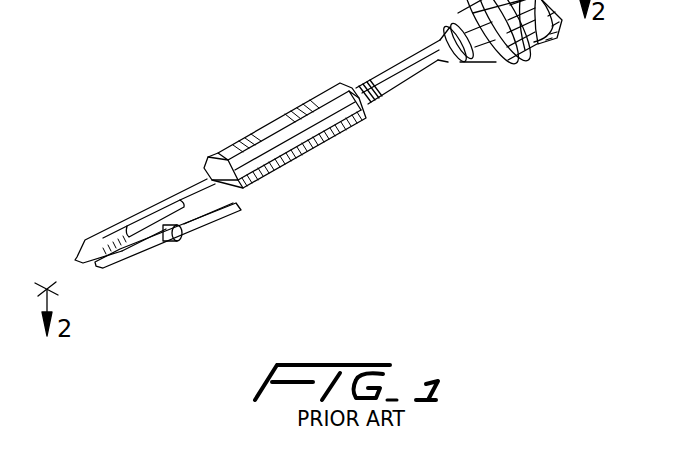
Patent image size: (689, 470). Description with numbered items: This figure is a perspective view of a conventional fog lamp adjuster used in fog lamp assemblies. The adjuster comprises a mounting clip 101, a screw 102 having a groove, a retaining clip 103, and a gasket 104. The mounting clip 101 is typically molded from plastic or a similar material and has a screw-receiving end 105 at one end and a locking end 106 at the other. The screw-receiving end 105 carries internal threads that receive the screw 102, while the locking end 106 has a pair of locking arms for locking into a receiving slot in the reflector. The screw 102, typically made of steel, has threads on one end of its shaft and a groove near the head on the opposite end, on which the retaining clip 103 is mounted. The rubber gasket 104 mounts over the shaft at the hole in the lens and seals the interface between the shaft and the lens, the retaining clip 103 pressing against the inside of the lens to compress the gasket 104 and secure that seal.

The mounting clip 101 is at (319, 180).
The screw 102 is at (402, 72).
The retaining clip 103 is at (489, 47).
The gasket 104 is at (518, 52).
The screw-receiving end 105 is at (343, 83).
The locking end 106 is at (193, 190).